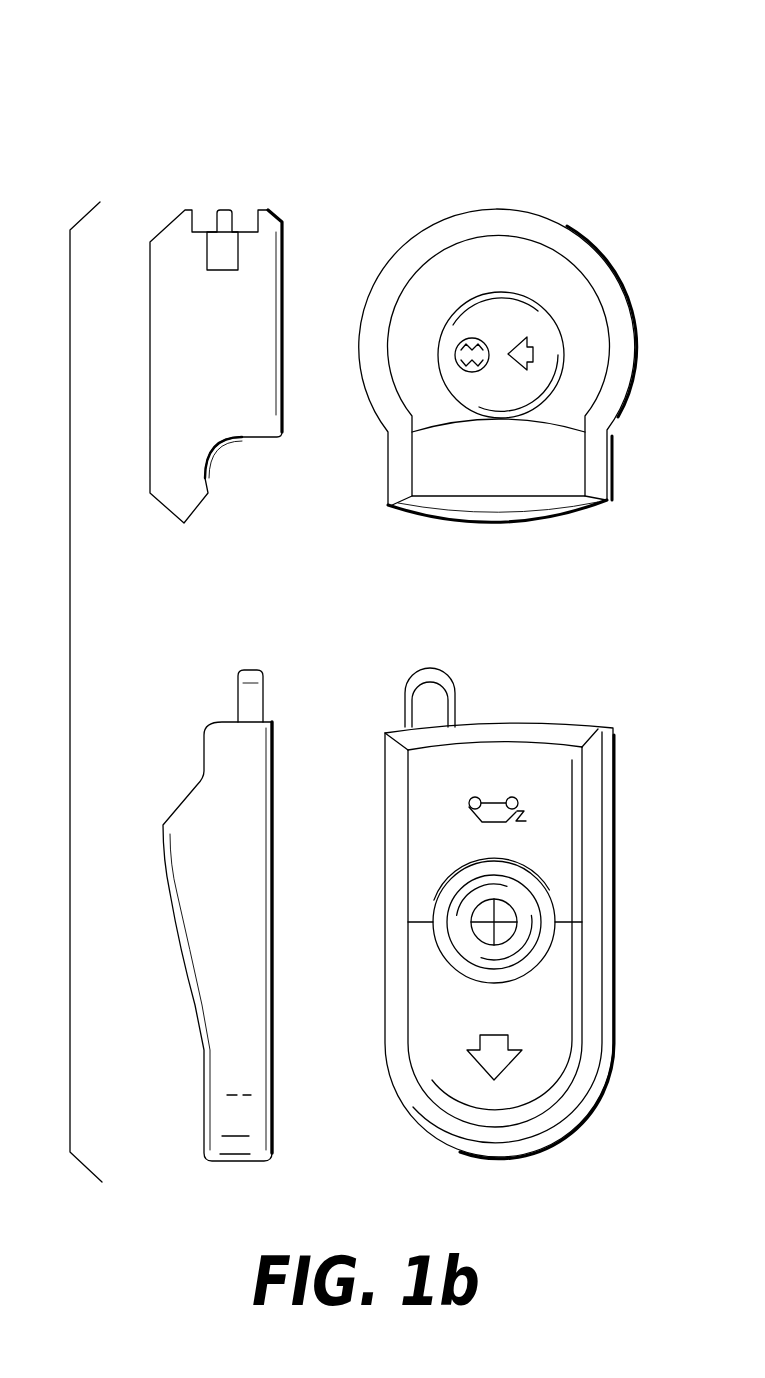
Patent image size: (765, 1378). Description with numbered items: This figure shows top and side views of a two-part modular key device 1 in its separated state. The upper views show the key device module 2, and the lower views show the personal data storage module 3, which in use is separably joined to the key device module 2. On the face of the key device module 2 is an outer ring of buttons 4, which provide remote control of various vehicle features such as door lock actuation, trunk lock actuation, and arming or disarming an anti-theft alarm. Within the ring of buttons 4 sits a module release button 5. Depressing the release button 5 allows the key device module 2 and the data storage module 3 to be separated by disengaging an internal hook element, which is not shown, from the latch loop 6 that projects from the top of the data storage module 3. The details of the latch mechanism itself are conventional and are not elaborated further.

The modular key device 1 is at (398, 29).
The key device module 2 is at (284, 222).
The personal data storage module 3 is at (278, 1068).
The ring of buttons 4 is at (500, 250).
The module release button 5 is at (505, 310).
The latch loop 6 is at (256, 668).